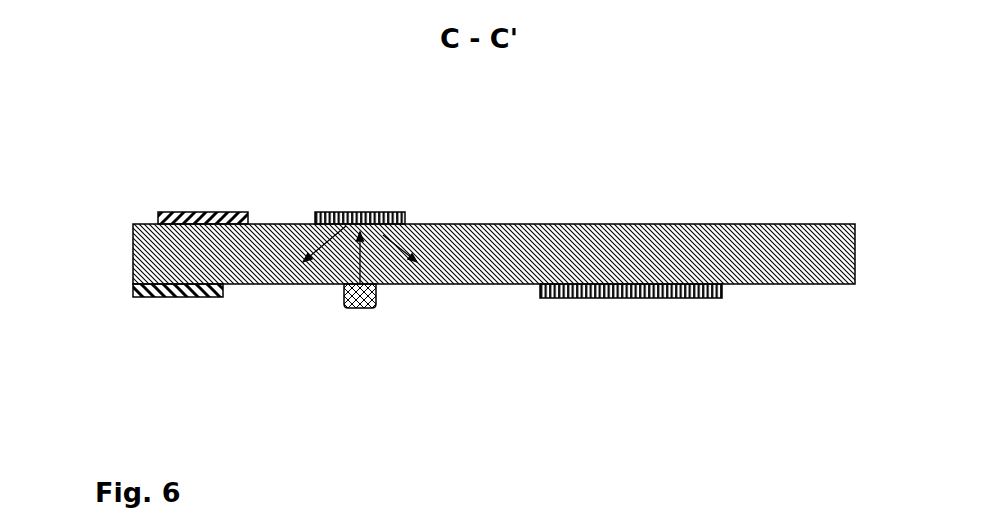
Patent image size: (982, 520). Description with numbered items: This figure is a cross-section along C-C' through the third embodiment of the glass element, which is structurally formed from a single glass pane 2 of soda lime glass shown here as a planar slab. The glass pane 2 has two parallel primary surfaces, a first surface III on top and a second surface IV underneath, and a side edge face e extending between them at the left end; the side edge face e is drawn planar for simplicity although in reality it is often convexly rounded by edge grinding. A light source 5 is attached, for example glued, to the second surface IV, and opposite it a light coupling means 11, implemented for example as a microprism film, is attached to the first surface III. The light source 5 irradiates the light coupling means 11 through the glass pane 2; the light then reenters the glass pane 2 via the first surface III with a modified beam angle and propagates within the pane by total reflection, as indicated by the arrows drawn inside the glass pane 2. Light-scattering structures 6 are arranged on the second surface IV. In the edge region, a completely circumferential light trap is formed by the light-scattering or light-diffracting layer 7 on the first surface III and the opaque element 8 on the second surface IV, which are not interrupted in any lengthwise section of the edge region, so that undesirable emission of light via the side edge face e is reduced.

The glass pane 2 is at (459, 228).
The light source 5 is at (362, 308).
The light-scattering structures 6 is at (625, 297).
The light-scattering or light-diffracting layer 7 is at (183, 223).
The opaque element 8 is at (180, 287).
The light coupling means 11 is at (346, 224).
The first surface III is at (758, 222).
The second surface IV is at (813, 288).
The side edge face e is at (132, 255).